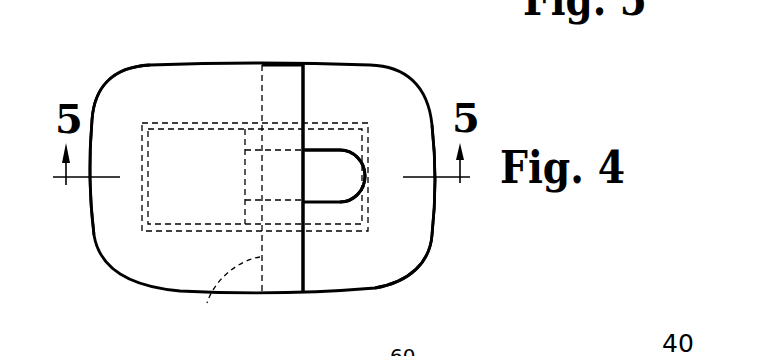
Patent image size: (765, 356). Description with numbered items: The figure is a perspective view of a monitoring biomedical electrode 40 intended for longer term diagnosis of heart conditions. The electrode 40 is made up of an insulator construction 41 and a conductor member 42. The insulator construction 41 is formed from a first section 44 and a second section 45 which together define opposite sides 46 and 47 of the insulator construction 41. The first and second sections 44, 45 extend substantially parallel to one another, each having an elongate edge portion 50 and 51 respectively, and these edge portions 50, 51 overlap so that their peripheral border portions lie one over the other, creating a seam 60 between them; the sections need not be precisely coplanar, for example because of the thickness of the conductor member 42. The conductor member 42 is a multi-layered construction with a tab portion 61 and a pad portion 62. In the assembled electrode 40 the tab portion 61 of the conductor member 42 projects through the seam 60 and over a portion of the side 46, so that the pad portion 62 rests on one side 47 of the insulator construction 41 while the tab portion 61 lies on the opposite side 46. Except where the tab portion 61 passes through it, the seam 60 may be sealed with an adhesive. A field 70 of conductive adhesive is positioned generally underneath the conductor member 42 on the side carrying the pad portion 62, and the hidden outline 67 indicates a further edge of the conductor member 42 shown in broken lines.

The electrode 40 is at (376, 60).
The insulator construction 41 is at (165, 77).
The conductor member 42 is at (377, 166).
The first section 44 is at (123, 97).
The second section 45 is at (410, 215).
The side 46 is at (107, 236).
The side 47 is at (410, 258).
The edge portion 50 is at (303, 268).
The edge portion 51 is at (226, 294).
The seam 60 is at (278, 80).
The tab portion 61 is at (348, 163).
The pad portion 62 is at (207, 138).
The tab upper edge 67 is at (329, 160).
The field of conductive adhesive 70 is at (353, 232).